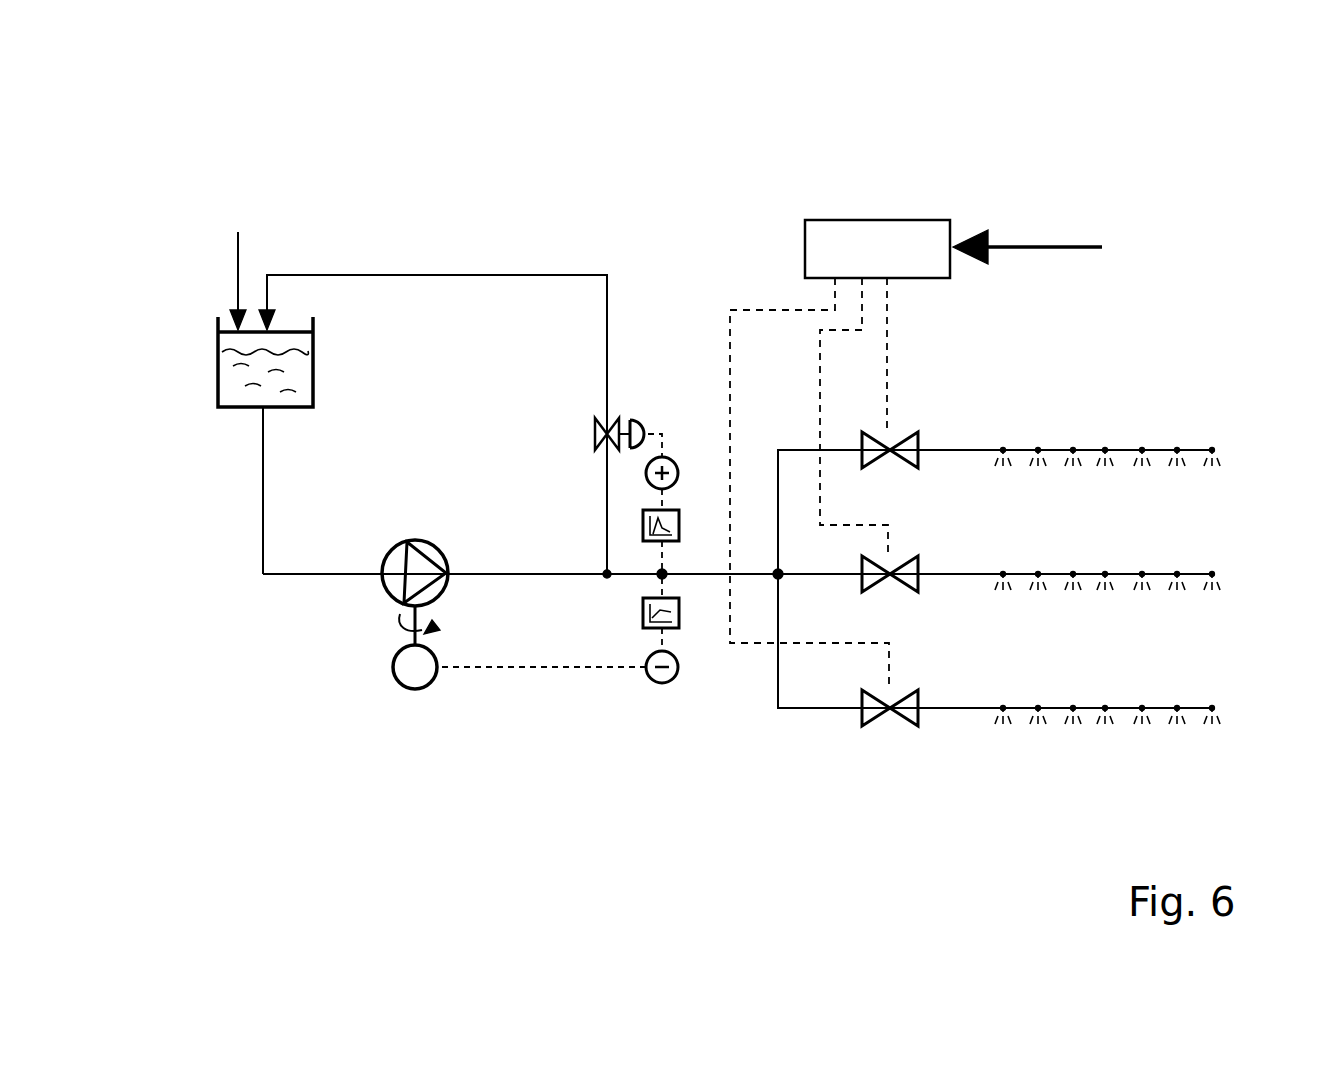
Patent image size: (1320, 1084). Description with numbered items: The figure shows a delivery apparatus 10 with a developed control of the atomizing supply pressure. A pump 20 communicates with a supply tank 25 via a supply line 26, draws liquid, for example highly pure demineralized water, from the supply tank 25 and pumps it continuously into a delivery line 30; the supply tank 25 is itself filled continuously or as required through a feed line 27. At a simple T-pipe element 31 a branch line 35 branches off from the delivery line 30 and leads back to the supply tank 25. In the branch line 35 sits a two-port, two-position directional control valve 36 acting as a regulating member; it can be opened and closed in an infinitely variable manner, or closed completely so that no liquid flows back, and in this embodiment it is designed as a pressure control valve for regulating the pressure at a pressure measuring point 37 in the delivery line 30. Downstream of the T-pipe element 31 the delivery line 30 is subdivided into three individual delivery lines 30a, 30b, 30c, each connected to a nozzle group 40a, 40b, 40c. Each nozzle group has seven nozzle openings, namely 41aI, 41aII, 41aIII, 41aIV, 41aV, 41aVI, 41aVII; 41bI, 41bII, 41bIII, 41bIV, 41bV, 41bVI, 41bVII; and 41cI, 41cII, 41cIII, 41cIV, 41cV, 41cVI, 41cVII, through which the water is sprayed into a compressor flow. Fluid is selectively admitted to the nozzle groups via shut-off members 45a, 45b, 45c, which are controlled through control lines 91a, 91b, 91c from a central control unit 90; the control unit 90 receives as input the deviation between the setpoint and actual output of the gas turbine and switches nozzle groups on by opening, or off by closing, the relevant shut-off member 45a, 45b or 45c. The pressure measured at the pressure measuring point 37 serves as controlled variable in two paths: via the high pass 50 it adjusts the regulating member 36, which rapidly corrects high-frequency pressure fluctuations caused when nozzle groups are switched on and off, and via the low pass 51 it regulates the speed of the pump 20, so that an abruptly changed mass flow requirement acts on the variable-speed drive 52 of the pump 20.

The apparatus 10 is at (312, 170).
The pump 20 is at (389, 555).
The supply tank 25 is at (315, 352).
The supply line 26 is at (266, 448).
The feed line 27 is at (232, 258).
The delivery line 30 is at (536, 578).
The individual delivery line 30a is at (805, 713).
The individual delivery line 30b is at (823, 580).
The individual delivery line 30c is at (805, 456).
The T-pipe element 31 is at (605, 590).
The branch line 35 is at (519, 274).
The 2/2-way directional control valve 36 is at (602, 418).
The pressure measuring point 37 is at (658, 572).
The nozzle group 40a is at (946, 696).
The nozzle group 40b is at (946, 562).
The nozzle group 40c is at (948, 436).
The nozzle opening 41aI is at (1003, 728).
The nozzle opening 41aII is at (1038, 728).
The nozzle opening 41aIII is at (1073, 728).
The nozzle opening 41aIV is at (1105, 728).
The nozzle opening 41aV is at (1142, 728).
The nozzle opening 41aVI is at (1177, 728).
The nozzle opening 41aVII is at (1212, 728).
The nozzle opening 41bI is at (1003, 594).
The nozzle opening 41bII is at (1038, 594).
The nozzle opening 41bIII is at (1073, 594).
The nozzle opening 41bIV is at (1105, 594).
The nozzle opening 41bV is at (1142, 594).
The nozzle opening 41bVI is at (1177, 594).
The nozzle opening 41bVII is at (1212, 594).
The nozzle opening 41cI is at (1003, 470).
The nozzle opening 41cII is at (1038, 470).
The nozzle opening 41cIII is at (1073, 470).
The nozzle opening 41cIV is at (1105, 470).
The nozzle opening 41cV is at (1142, 470).
The nozzle opening 41cVI is at (1177, 470).
The nozzle opening 41cVII is at (1212, 470).
The shut-off member 45a is at (890, 726).
The shut-off member 45b is at (890, 592).
The shut-off member 45c is at (890, 468).
The high pass 50 is at (640, 522).
The low pass 51 is at (681, 624).
The variable-speed drive 52 is at (420, 692).
The central control unit 90 is at (881, 218).
The control line 91a is at (732, 350).
The control line 91b is at (822, 354).
The control line 91c is at (889, 345).